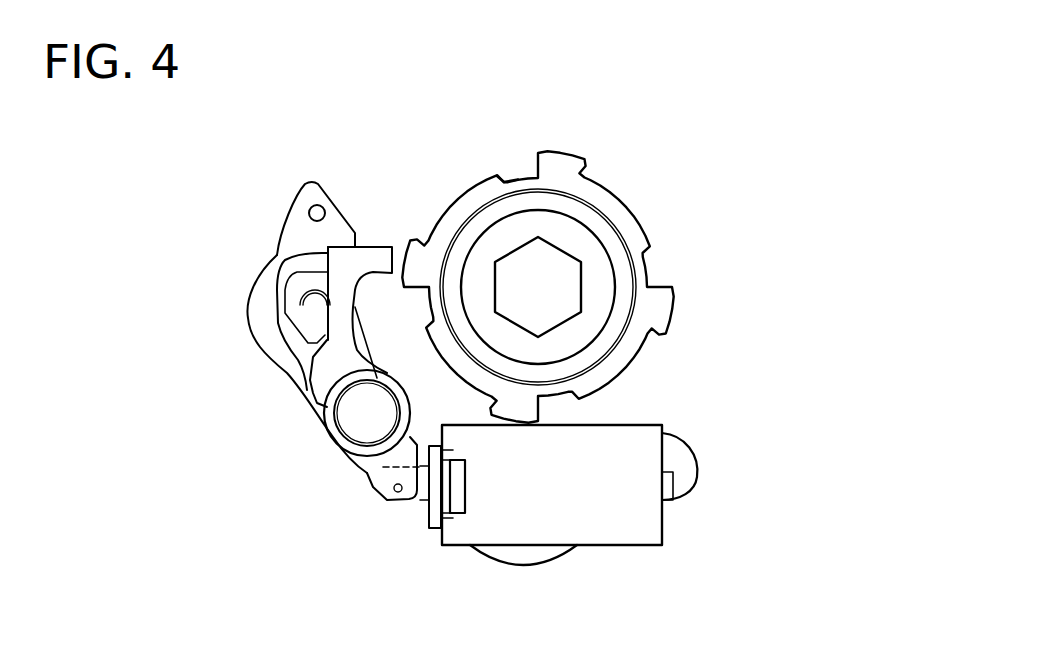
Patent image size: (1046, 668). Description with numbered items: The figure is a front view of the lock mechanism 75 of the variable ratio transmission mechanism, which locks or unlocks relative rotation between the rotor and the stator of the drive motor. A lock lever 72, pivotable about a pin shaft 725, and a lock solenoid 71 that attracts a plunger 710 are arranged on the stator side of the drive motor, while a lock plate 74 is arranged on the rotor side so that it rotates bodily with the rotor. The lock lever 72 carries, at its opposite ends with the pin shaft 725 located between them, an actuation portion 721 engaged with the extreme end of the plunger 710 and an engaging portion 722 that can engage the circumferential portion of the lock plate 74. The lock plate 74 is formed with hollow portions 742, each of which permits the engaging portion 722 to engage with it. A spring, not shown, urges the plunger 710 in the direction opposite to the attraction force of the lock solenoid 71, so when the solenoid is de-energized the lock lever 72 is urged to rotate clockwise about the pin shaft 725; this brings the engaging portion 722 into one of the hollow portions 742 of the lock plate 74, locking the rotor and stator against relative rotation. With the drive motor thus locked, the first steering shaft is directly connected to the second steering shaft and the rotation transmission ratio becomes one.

The lock solenoid 71 is at (603, 517).
The plunger 710 is at (422, 500).
The lock lever 72 is at (340, 305).
The actuation portion 721 is at (385, 482).
The engaging portion 722 is at (377, 256).
The pin shaft 725 is at (363, 425).
The lock plate 74 is at (627, 223).
The hollow portions 742 is at (518, 173).
The lock mechanism 75 is at (614, 251).